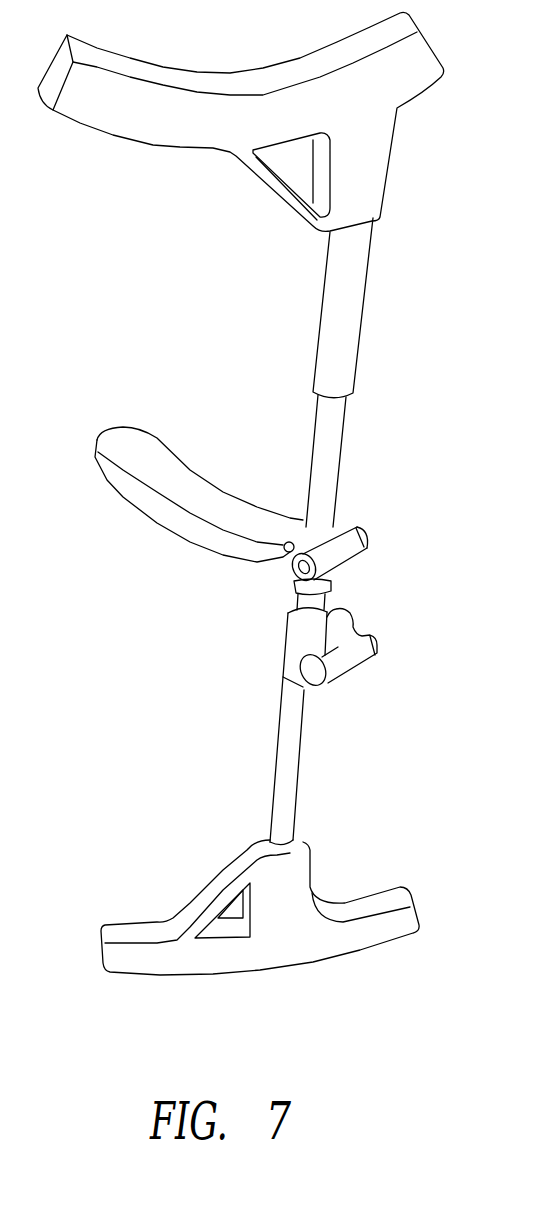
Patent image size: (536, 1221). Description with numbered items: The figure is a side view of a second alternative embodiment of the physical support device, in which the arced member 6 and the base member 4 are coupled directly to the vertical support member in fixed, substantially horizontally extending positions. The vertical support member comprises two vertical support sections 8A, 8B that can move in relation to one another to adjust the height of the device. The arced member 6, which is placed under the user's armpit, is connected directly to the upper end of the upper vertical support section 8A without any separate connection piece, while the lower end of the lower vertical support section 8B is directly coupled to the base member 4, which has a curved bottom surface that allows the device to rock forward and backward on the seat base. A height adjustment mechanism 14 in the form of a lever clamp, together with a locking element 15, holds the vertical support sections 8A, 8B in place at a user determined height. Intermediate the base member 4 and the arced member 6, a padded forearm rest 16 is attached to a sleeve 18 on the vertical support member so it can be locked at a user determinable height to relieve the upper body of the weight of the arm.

The base member 4 is at (380, 943).
The arced member 6 is at (155, 142).
The vertical support section 8A is at (355, 367).
The vertical support section 8B is at (302, 765).
The adjustment mechanism 14 is at (282, 653).
The locking element 15 is at (378, 643).
The forearm rest 16 is at (150, 518).
The sleeve 18 is at (370, 533).